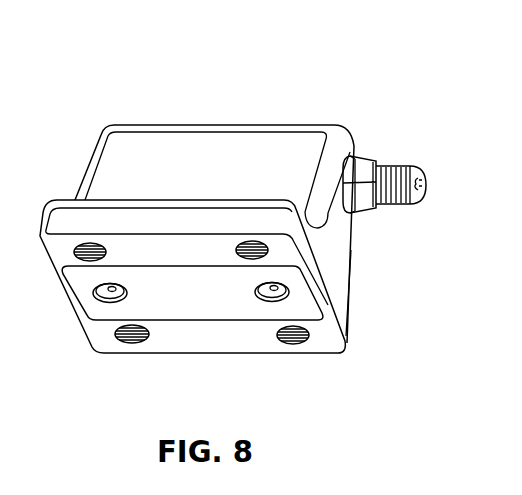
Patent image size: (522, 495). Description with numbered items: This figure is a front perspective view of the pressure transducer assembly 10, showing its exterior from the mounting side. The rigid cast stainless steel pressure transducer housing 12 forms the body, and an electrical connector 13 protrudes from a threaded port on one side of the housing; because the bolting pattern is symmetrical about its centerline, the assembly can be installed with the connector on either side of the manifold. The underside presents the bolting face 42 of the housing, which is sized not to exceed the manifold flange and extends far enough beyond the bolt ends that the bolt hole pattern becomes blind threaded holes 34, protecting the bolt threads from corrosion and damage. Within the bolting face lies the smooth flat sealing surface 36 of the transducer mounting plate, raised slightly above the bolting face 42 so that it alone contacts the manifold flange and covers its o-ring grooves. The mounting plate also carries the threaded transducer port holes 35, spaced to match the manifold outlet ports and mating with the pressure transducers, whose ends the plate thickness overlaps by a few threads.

The pressure transducer assembly 10 is at (217, 96).
The pressure transducer housing 12 is at (133, 126).
The electrical connector 13 is at (386, 150).
The blind threaded holes 34 is at (268, 254).
The threaded transducer port holes 35 is at (99, 299).
The smooth flat sealing surface 36 is at (178, 300).
The bolting face 42 is at (208, 340).